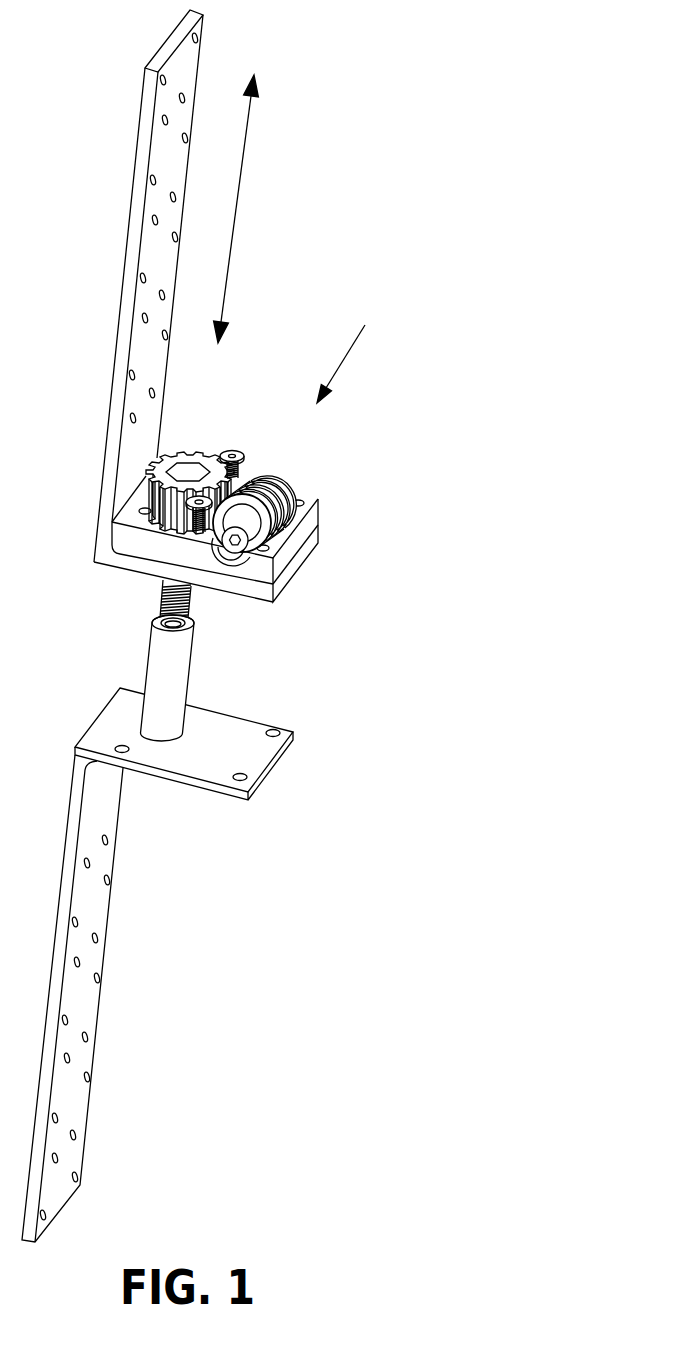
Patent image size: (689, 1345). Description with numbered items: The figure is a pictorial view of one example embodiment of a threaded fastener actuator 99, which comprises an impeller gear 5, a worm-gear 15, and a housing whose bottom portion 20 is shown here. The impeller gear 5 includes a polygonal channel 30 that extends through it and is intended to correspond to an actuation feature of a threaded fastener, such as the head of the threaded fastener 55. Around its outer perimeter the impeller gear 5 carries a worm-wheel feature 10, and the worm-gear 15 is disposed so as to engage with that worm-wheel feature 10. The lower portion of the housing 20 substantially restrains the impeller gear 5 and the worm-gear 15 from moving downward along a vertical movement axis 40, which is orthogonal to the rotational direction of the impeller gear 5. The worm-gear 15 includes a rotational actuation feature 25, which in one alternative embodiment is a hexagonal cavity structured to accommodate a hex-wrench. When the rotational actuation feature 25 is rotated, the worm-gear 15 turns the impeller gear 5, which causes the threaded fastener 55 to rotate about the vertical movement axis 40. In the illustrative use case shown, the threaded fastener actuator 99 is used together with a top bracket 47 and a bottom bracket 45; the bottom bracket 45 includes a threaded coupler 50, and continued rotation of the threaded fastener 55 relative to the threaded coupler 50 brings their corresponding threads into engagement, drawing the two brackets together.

The threaded fastener actuator 99 is at (202, 628).
The vertical movement axis 40 is at (250, 118).
The top bracket 47 is at (137, 152).
The bottom bracket 45 is at (296, 733).
The bottom portion of the housing 20 is at (318, 500).
The impeller gear 5 is at (192, 451).
The polygonal channel 30 is at (188, 453).
The worm-wheel feature 10 is at (205, 456).
The worm-gear 15 is at (272, 478).
The rotational actuation feature 25 is at (238, 546).
The threaded fastener 55 is at (163, 601).
The threaded coupler 50 is at (190, 690).